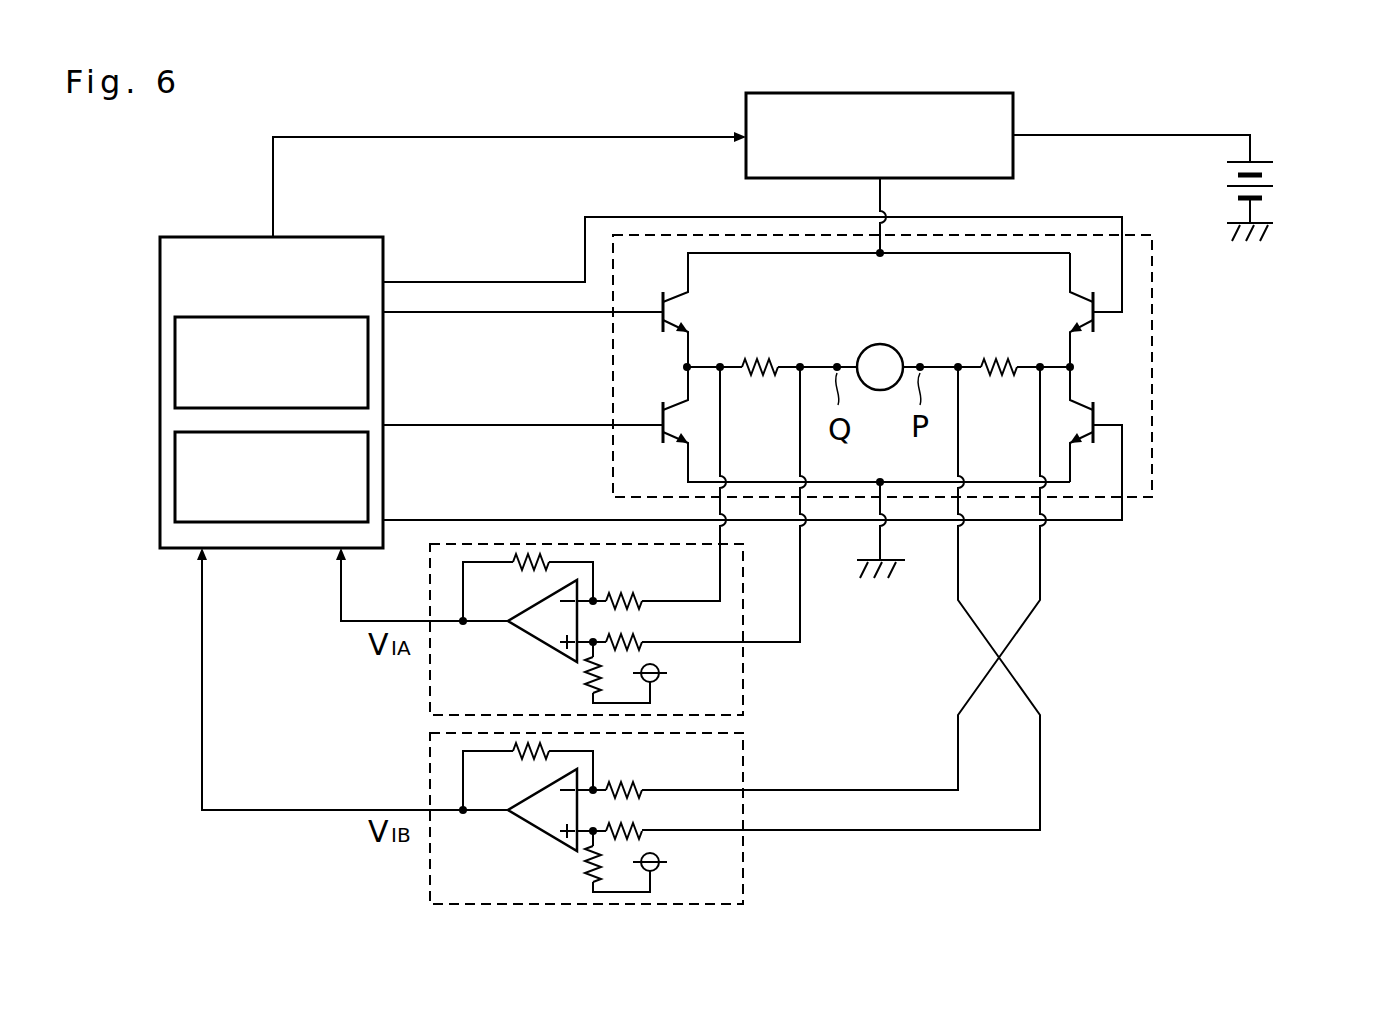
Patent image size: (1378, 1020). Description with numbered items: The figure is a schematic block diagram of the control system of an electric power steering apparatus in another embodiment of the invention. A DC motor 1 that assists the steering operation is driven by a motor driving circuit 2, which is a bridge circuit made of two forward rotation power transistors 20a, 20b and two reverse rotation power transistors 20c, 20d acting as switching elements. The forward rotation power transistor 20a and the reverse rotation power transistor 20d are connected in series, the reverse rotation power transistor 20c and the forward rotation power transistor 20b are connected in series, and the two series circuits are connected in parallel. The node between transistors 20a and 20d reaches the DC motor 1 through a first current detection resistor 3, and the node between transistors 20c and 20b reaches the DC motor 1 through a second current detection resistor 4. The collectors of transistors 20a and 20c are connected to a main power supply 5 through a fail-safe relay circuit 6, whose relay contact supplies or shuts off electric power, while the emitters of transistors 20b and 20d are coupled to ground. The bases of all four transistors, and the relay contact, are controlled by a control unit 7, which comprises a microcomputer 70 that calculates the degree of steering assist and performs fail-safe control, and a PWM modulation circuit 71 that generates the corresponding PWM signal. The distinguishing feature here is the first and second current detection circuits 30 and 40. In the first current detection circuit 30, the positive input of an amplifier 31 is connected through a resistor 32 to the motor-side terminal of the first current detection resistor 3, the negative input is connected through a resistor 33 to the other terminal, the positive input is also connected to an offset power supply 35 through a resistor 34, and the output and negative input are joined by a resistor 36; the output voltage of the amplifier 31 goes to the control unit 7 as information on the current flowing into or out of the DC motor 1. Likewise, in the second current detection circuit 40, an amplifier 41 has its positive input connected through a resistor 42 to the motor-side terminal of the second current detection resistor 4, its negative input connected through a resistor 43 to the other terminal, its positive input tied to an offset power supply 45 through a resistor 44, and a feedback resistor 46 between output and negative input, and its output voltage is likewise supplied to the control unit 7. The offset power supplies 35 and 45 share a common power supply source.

The DC motor 1 is at (880, 343).
The motor driving circuit 2 is at (1137, 233).
The first current detection resistor 3 is at (762, 352).
The second current detection resistor 4 is at (1000, 352).
The main power supply 5 is at (1268, 150).
The fail-safe relay circuit 6 is at (1014, 112).
The control unit 7 is at (197, 237).
The microcomputer 70 is at (175, 357).
The PWM modulation circuit 71 is at (175, 487).
The forward rotation power transistor 20a is at (662, 300).
The forward rotation power transistor 20b is at (1113, 400).
The reverse rotation power transistor 20c is at (1097, 318).
The reverse rotation power transistor 20d is at (662, 412).
The first current detection circuit 30 is at (745, 682).
The amplifier 31 is at (530, 637).
The resistor 32 is at (628, 628).
The resistor 33 is at (628, 592).
The resistor 34 is at (580, 672).
The offset power supply 35 is at (653, 677).
The resistor 36 is at (525, 570).
The second current detection circuit 40 is at (745, 764).
The amplifier 41 is at (530, 826).
The resistor 42 is at (628, 817).
The resistor 43 is at (628, 781).
The resistor 44 is at (580, 861).
The offset power supply 45 is at (653, 866).
The resistor 46 is at (525, 759).